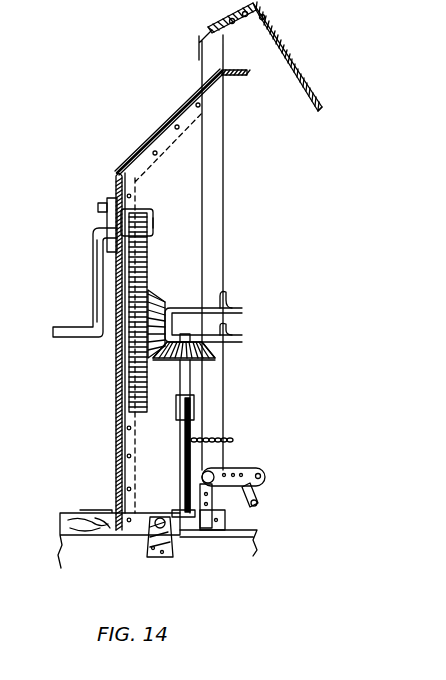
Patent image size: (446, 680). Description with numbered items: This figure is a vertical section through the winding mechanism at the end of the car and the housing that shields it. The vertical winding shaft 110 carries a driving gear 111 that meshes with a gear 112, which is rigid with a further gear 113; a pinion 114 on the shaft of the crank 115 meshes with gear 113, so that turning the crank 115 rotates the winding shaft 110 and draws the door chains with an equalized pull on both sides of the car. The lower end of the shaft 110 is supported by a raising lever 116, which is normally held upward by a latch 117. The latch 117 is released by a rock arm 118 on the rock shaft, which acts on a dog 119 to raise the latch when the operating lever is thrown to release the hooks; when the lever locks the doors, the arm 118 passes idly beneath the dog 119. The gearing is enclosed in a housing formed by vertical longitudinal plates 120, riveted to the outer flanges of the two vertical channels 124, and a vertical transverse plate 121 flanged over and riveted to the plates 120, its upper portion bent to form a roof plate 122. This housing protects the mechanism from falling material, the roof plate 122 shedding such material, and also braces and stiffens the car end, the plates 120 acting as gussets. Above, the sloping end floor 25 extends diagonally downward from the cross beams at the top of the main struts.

The sloping end floor 25 is at (294, 70).
The winding shaft 110 is at (182, 455).
The driving gear 111 is at (175, 358).
The gear 112 is at (157, 303).
The gear 113 is at (143, 262).
The pinion 114 is at (140, 216).
The crank 115 is at (98, 278).
The raising lever 116 is at (145, 512).
The latch 117 is at (227, 468).
The rock arm 118 is at (247, 497).
The dog 119 is at (258, 490).
The vertical longitudinal plate 120 is at (140, 186).
The vertical transverse plate 121 is at (116, 368).
The roof plate 122 is at (177, 114).
The vertical channel 124 is at (213, 176).